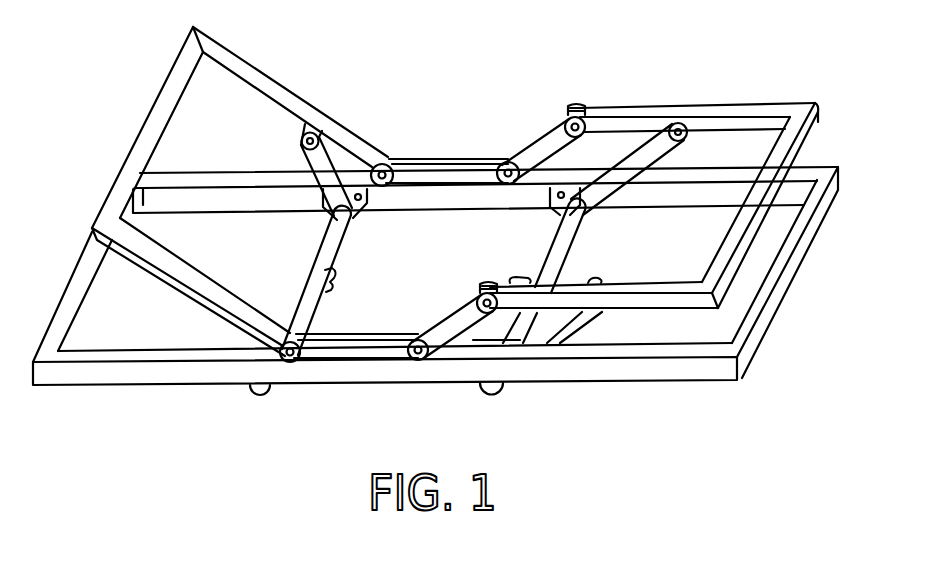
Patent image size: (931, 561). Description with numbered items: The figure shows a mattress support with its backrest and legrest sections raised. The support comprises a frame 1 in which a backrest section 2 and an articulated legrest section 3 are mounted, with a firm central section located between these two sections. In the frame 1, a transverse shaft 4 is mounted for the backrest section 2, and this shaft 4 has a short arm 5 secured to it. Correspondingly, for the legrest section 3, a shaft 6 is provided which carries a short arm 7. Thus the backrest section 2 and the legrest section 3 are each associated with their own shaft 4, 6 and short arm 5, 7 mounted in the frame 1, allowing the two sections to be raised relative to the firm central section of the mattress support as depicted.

The frame 1 is at (760, 328).
The backrest section 2 is at (242, 62).
The articulated legrest section 3 is at (620, 105).
The transverse shaft 4 is at (305, 300).
The short arm 5 is at (322, 286).
The shaft 6 is at (557, 240).
The short arm 7 is at (527, 280).